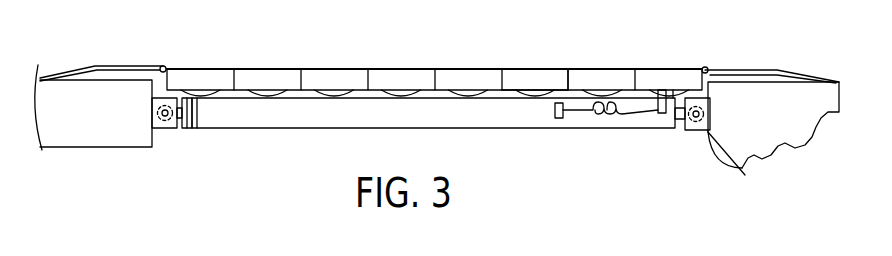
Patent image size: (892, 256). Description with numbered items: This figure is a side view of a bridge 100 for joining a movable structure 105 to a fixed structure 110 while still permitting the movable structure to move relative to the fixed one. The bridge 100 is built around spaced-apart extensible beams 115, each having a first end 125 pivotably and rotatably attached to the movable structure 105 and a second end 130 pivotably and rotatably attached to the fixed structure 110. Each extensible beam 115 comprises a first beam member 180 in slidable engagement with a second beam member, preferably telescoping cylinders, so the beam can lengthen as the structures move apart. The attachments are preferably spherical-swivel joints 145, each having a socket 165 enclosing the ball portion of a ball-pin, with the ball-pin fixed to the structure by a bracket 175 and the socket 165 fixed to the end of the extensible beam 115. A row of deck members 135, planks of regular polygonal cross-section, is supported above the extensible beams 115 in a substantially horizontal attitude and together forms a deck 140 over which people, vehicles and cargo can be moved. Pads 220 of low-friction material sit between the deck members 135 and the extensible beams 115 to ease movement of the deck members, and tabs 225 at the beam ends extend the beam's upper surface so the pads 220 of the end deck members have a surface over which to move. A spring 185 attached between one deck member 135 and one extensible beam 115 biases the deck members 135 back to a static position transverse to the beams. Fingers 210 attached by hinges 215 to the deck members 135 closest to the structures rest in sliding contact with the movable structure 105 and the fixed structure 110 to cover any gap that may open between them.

The bridge 100 is at (623, 46).
The movable structure 105 is at (68, 119).
The fixed structure 110 is at (744, 123).
The extensible beam 115 is at (474, 134).
The first end 125 is at (173, 136).
The second end 130 is at (679, 130).
The deck member 135 is at (545, 69).
The deck 140 is at (461, 69).
The spherical-swivel joint 145 is at (695, 146).
The socket 165 is at (157, 109).
The bracket 175 is at (741, 170).
The first beam member 180 is at (188, 130).
The spring 185 is at (572, 115).
The finger 210 is at (745, 69).
The hinge 215 is at (165, 66).
The pad 220 is at (267, 98).
The tab 225 is at (672, 90).